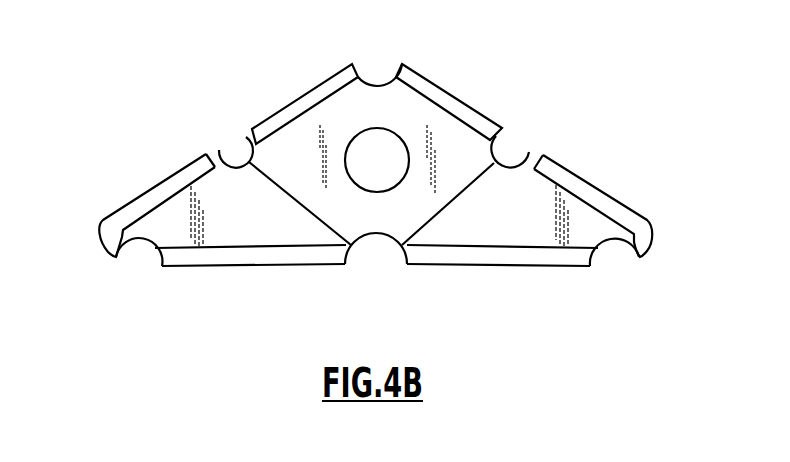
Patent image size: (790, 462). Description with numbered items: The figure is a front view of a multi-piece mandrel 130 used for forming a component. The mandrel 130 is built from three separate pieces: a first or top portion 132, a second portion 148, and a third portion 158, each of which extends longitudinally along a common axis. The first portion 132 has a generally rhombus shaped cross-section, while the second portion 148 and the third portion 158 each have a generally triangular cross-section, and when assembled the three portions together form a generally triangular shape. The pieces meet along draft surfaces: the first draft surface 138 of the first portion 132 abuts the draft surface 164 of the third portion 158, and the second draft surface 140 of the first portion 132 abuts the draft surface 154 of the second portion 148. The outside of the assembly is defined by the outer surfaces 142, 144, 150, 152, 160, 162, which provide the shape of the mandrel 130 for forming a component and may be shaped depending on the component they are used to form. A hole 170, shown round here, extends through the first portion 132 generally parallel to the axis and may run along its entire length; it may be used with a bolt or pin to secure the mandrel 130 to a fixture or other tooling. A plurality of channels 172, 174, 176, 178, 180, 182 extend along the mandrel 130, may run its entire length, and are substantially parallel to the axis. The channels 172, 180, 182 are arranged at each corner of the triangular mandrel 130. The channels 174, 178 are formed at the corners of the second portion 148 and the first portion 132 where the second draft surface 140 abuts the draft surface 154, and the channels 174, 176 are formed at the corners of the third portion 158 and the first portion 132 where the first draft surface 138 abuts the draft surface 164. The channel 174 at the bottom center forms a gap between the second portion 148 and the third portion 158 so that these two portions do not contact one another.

The multi-piece mandrel 130 is at (260, 65).
The first portion 132 is at (442, 125).
The first draft surface 138 is at (503, 132).
The second draft surface 140 is at (284, 188).
The outer surface 142 is at (488, 117).
The outer surface 144 is at (307, 92).
The second portion 148 is at (213, 237).
The outer surface 150 is at (148, 193).
The outer surface 152 is at (268, 268).
The draft surface 154 is at (242, 140).
The third portion 158 is at (537, 228).
The outer surface 160 is at (512, 267).
The outer surface 162 is at (590, 183).
The draft surface 164 is at (447, 212).
The hole 170 is at (387, 145).
The channel 172 is at (375, 83).
The channel 174 is at (374, 234).
The channel 176 is at (532, 163).
The channel 178 is at (218, 150).
The channel 180 is at (140, 245).
The channel 182 is at (616, 243).